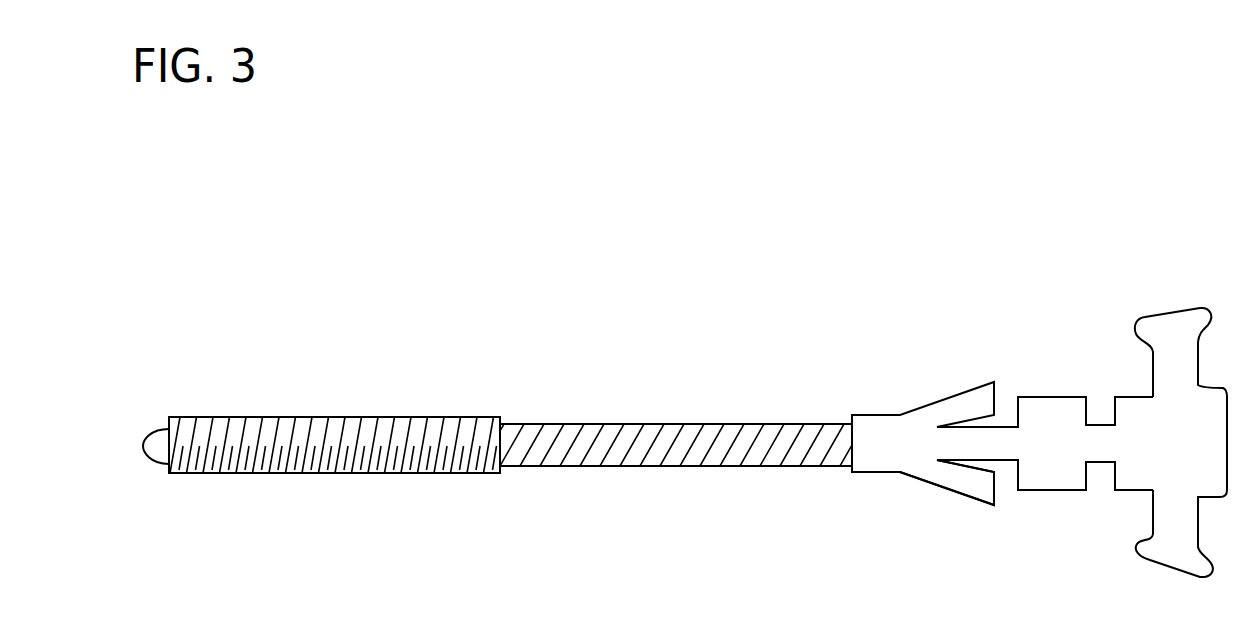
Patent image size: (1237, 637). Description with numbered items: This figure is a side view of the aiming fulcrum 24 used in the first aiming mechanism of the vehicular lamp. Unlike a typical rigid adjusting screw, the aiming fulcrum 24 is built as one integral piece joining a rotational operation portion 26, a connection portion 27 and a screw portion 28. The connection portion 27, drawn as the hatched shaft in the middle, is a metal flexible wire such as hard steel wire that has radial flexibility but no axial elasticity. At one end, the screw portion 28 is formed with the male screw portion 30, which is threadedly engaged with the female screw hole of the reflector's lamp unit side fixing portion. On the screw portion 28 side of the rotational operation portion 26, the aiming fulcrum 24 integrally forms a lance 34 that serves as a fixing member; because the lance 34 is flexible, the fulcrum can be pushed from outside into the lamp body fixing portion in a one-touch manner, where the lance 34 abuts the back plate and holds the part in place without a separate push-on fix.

The aiming fulcrum 24 is at (910, 370).
The rotational operation portion 26 is at (1172, 323).
The connection portion 27 is at (738, 457).
The screw portion 28 is at (316, 437).
The male screw portion 30 is at (411, 478).
The lance 34 is at (966, 487).